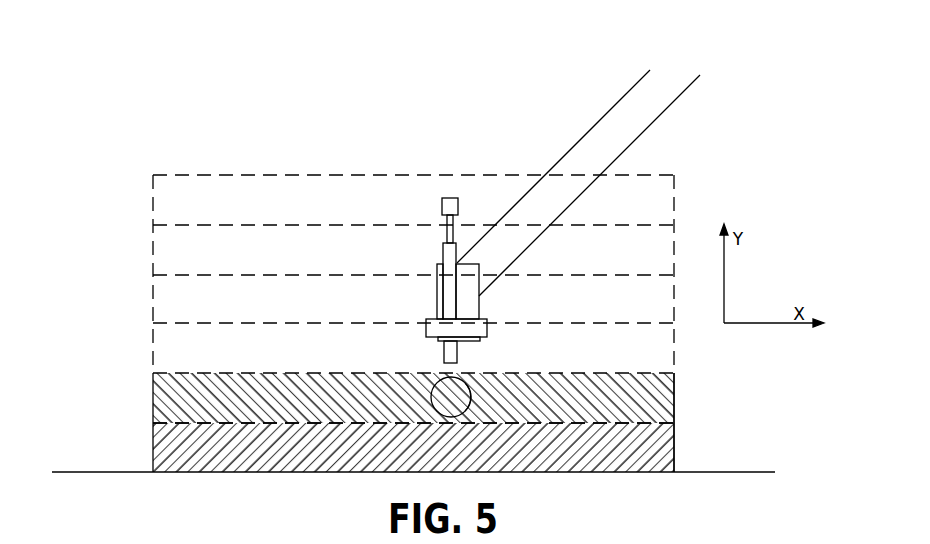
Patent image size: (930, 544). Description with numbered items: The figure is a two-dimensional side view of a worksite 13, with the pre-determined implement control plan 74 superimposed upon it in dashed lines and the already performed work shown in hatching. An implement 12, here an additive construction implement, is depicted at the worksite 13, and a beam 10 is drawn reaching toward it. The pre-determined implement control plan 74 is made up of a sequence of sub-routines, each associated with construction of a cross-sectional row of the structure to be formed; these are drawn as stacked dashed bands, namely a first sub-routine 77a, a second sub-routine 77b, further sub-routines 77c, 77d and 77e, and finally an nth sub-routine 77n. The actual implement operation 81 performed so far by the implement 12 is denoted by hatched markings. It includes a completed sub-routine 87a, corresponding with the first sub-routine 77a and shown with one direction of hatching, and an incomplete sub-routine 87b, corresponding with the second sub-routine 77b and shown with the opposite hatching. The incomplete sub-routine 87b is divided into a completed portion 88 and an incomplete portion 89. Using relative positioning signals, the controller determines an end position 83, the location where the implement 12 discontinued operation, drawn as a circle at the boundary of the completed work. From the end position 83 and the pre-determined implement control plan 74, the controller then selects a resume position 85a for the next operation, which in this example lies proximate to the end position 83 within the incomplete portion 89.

The laser beam 10 is at (592, 145).
The implement 12 is at (452, 298).
The worksite 13 is at (724, 472).
The pre-determined implement control plan 74 is at (402, 172).
The first sub-routine 77a is at (153, 447).
The second sub-routine 77b is at (153, 398).
The third layer 77c is at (153, 350).
The fourth layer 77d is at (153, 300).
The fifth layer 77e is at (153, 250).
The nth sub-routine 77n is at (153, 200).
The actual implement operation 81 is at (278, 452).
The end position 83 is at (469, 377).
The resume position 85a is at (471, 403).
The completed sub-routine 87a is at (523, 430).
The incomplete sub-routine 87b is at (315, 398).
The completed portion 88 is at (238, 399).
The incomplete portion 89 is at (630, 398).